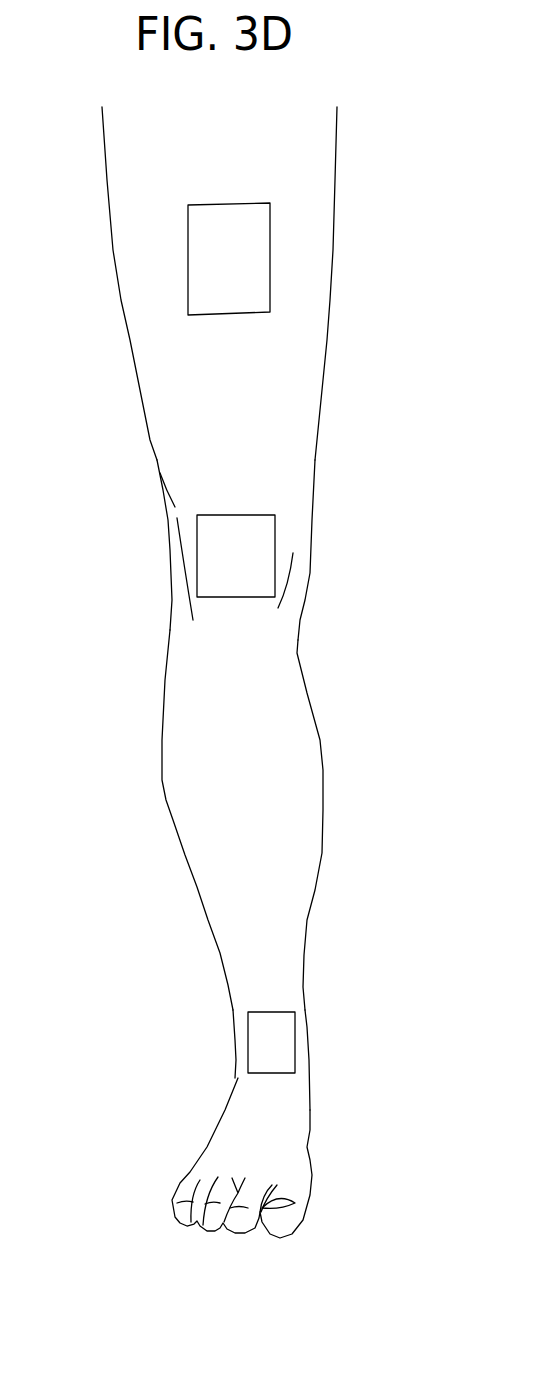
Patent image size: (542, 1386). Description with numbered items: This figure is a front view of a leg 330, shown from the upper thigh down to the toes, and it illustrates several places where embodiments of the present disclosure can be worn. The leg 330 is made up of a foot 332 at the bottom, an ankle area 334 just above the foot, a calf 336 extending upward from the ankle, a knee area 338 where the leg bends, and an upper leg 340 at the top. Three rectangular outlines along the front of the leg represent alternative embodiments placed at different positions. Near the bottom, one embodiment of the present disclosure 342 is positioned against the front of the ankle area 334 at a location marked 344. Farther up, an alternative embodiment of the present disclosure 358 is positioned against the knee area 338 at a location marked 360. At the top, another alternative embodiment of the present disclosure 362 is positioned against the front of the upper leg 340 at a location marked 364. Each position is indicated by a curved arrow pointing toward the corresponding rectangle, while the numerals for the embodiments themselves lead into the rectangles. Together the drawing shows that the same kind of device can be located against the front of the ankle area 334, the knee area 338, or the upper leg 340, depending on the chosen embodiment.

The leg 330 is at (345, 778).
The foot 332 is at (167, 1143).
The ankle area 334 is at (212, 1073).
The calf 336 is at (147, 797).
The knee area 338 is at (147, 552).
The upper leg 340 is at (90, 298).
The embodiment of the present disclosure 342 is at (277, 1035).
The position on front of ankle area 344 is at (273, 1005).
The embodiment of the present disclosure 358 is at (247, 553).
The position on knee area 360 is at (247, 508).
The embodiment of the present disclosure 362 is at (253, 258).
The position on front of upper leg 364 is at (262, 195).